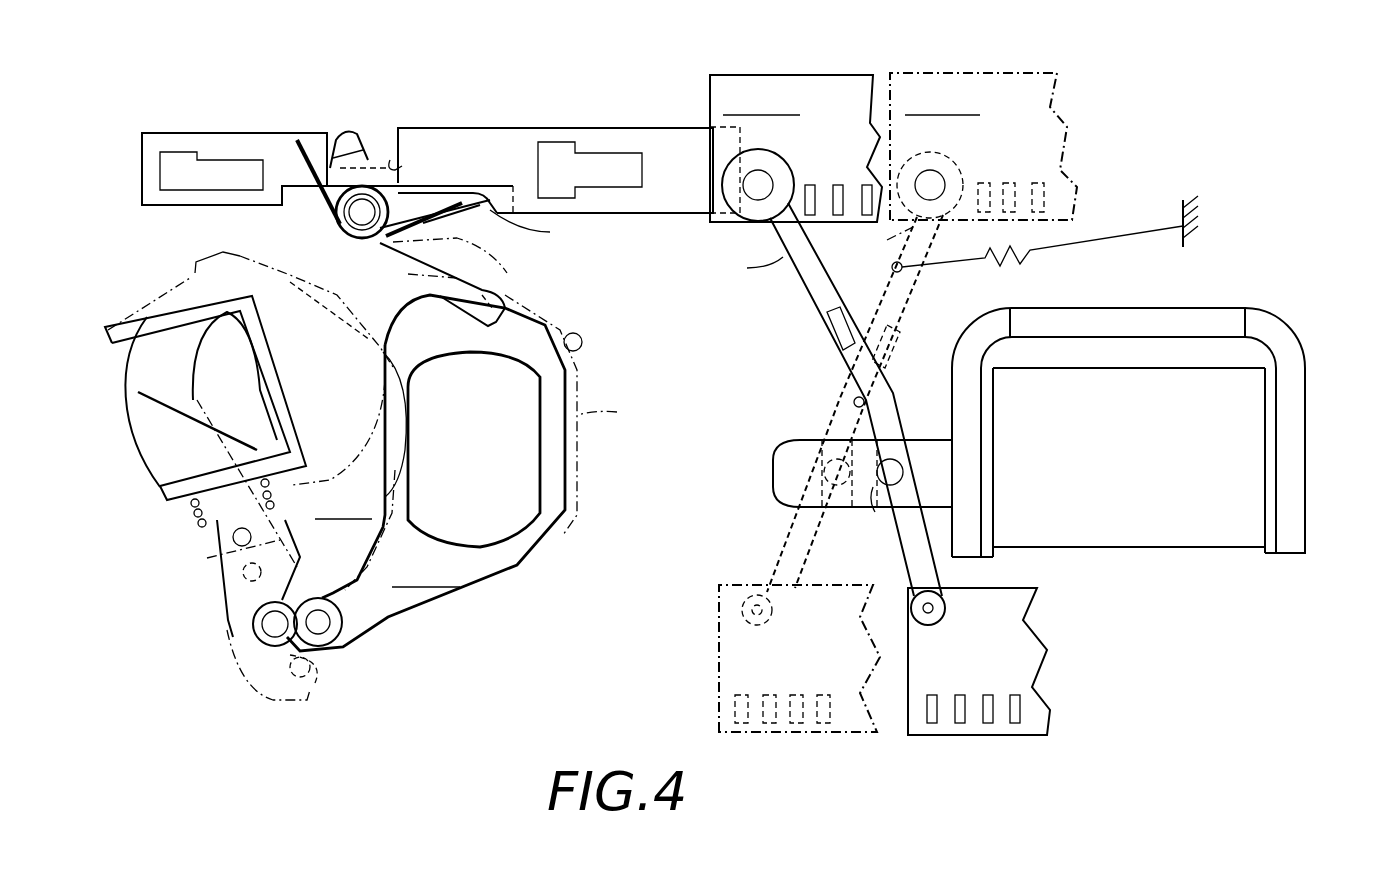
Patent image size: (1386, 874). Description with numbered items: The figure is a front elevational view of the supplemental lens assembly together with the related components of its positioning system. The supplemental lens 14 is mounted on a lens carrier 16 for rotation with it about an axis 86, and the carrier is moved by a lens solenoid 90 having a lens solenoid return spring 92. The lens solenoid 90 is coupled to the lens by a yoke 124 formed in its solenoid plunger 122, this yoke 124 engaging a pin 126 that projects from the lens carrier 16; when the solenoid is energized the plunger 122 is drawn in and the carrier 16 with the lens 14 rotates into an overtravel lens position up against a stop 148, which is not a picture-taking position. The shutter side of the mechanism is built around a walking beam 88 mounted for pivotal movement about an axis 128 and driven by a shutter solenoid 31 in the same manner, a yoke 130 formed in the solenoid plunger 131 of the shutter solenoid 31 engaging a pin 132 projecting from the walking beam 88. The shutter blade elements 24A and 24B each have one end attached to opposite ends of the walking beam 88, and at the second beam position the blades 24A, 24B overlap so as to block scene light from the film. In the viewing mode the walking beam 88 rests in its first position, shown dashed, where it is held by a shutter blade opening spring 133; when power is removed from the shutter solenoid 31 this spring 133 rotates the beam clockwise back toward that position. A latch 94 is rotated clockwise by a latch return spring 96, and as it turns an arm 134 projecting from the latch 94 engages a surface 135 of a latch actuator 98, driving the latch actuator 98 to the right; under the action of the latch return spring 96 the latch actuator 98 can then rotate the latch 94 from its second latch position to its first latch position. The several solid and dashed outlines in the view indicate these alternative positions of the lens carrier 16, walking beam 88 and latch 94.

The supplemental lens 14 is at (489, 460).
The lens carrier 16 is at (553, 403).
The shutter blade element 24A is at (717, 645).
The shutter blade element 24B is at (807, 73).
The shutter solenoid 31 is at (1240, 447).
The axis 86 is at (333, 627).
The walking beam 88 is at (913, 305).
The lens solenoid 90 is at (155, 430).
The lens solenoid return spring 92 is at (190, 507).
The latch 94 is at (455, 237).
The latch return spring 96 is at (323, 190).
The latch actuator 98 is at (497, 137).
The solenoid plunger 122 is at (210, 555).
The yoke 124 is at (257, 657).
The pin 126 is at (317, 678).
The axis 128 is at (854, 402).
The yoke 130 is at (873, 490).
The solenoid plunger 131 is at (777, 472).
The pin 132 is at (927, 410).
The shutter blade opening spring 133 is at (1022, 262).
The arm 134 is at (380, 165).
The surface 135 is at (398, 168).
The stop 148 is at (583, 337).